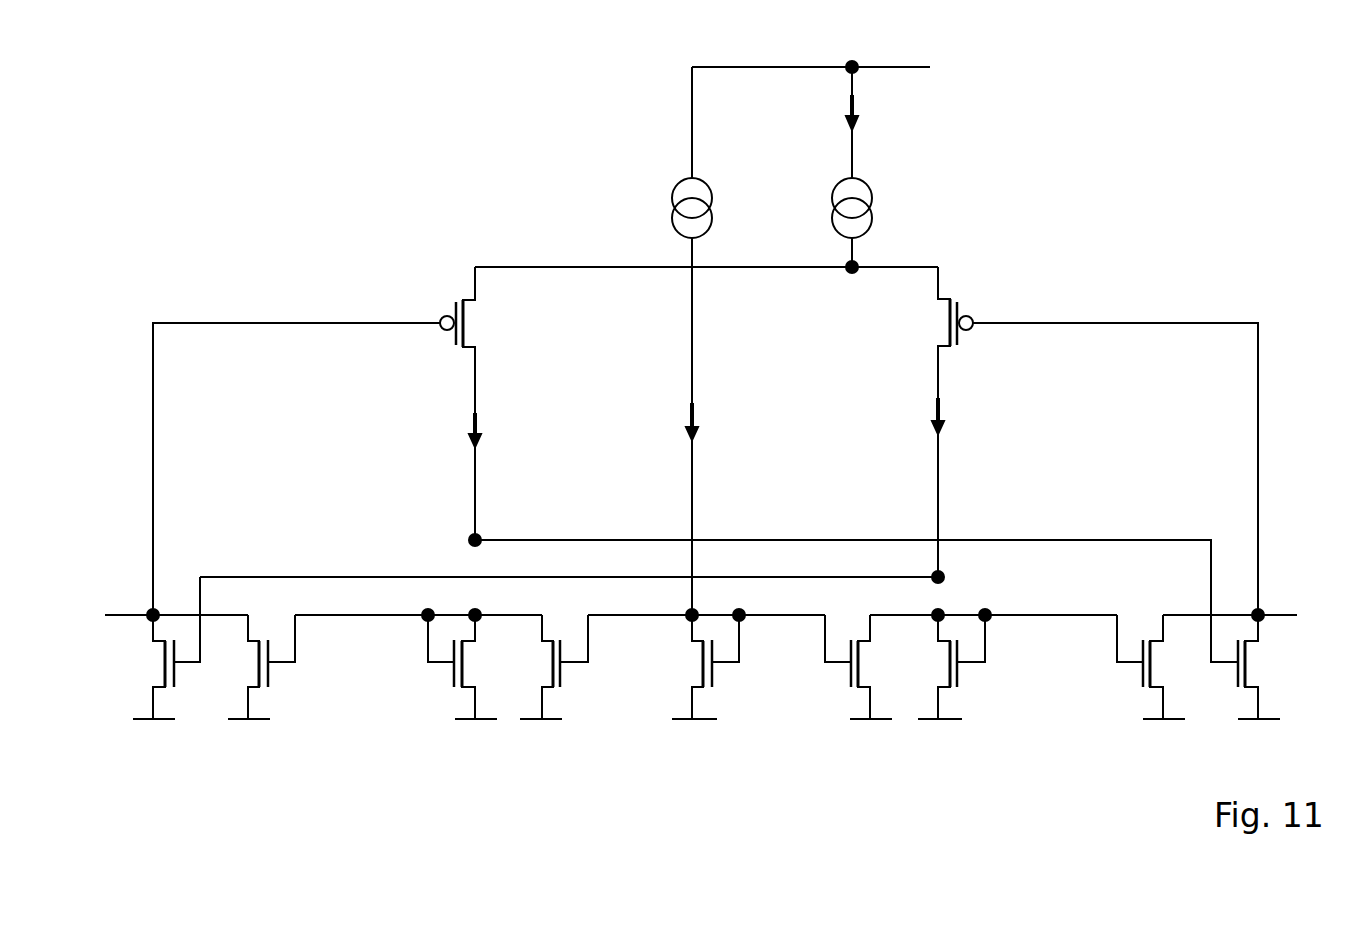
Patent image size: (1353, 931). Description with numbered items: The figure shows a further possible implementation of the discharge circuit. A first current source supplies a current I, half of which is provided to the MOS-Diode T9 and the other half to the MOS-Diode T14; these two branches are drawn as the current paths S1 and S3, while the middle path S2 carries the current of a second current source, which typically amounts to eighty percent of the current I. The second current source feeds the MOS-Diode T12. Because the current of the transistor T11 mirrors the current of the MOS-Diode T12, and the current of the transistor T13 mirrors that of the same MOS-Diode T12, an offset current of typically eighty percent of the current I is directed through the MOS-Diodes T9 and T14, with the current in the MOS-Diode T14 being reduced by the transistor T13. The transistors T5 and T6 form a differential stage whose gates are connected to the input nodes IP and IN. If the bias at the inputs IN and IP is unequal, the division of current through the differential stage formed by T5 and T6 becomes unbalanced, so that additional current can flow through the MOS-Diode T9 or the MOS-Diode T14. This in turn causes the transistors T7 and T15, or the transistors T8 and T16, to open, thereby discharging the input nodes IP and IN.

The current I is at (864, 109).
The transistor T5 is at (347, 441).
The transistor T6 is at (1065, 441).
The current branch S1 (0.5I) S1 is at (483, 443).
The current branch S2 (0.8I) S2 is at (700, 441).
The current branch S3 (0.5I) S3 is at (945, 461).
The input node IP is at (106, 616).
The input node IN is at (1301, 609).
The transistor T7 is at (175, 648).
The transistor T8 is at (265, 671).
The MOS-Diode T9 is at (451, 667).
The transistor T11 is at (571, 667).
The MOS-Diode T12 is at (722, 667).
The transistor T13 is at (841, 667).
The MOS-Diode T14 is at (969, 667).
The transistor T15 is at (1138, 667).
The transistor T16 is at (1233, 630).